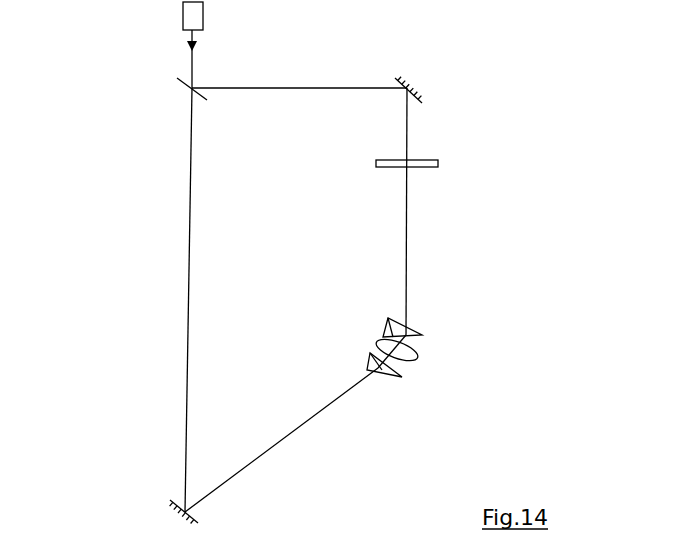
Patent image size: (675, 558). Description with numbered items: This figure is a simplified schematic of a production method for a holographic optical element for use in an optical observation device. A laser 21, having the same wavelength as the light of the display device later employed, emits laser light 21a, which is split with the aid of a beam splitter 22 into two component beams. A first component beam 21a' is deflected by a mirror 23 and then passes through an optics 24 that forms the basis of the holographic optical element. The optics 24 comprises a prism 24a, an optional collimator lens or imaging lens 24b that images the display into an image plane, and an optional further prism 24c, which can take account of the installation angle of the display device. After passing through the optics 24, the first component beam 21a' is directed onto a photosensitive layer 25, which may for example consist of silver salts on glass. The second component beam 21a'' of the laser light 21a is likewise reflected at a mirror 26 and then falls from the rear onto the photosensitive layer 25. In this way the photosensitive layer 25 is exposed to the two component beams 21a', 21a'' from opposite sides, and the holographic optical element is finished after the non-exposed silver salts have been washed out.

The laser 21 is at (203, 10).
The laser light 21a is at (221, 59).
The first component beam 21a' is at (134, 300).
The second component beam 21a'' is at (299, 69).
The beam splitter 22 is at (186, 92).
The mirror 23 is at (166, 496).
The optics 24 is at (409, 331).
The prism 24a is at (366, 361).
The collimator lens or imaging lens 24b is at (378, 346).
The further prism 24c is at (387, 320).
The photosensitive layer 25 is at (430, 167).
The mirror 26 is at (424, 86).